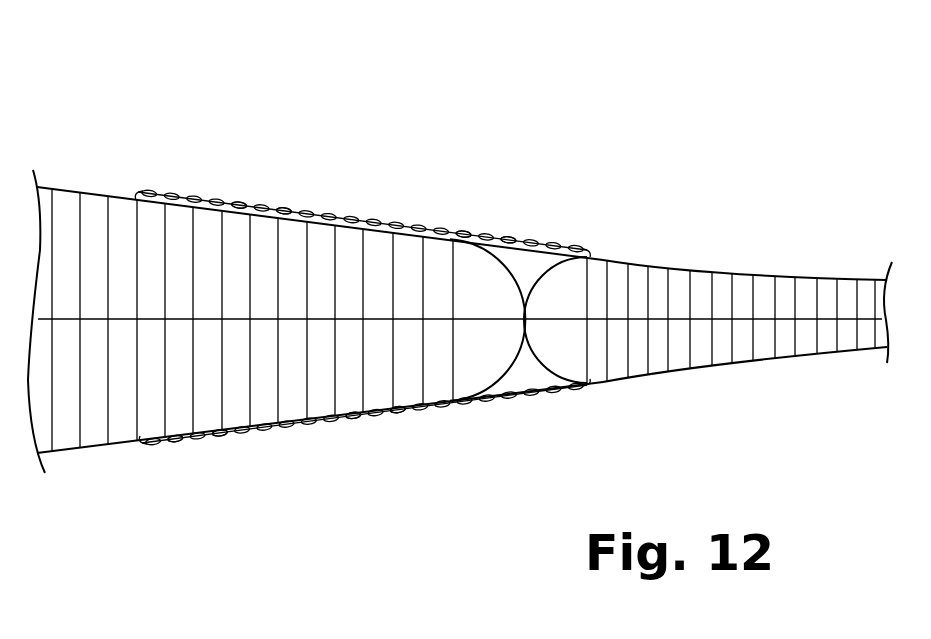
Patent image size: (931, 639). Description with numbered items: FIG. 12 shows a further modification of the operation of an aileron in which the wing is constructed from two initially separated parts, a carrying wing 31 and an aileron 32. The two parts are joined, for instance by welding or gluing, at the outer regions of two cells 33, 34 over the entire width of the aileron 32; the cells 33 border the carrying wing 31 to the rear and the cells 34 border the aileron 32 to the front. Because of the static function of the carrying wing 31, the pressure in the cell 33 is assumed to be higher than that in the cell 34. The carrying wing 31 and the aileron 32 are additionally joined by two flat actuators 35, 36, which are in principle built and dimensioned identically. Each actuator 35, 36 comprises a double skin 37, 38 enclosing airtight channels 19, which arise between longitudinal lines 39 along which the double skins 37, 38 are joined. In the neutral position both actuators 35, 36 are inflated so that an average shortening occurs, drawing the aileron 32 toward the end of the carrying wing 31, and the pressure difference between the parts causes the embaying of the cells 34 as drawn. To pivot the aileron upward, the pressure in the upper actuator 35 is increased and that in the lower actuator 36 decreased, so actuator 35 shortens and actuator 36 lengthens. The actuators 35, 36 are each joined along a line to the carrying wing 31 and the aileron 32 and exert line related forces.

The airtight channels 19 is at (460, 233).
The carrying wing 31 is at (118, 190).
The aileron 32 is at (765, 275).
The cells 33 is at (493, 358).
The cells 34 is at (578, 368).
The upper flat actuator 35 is at (359, 221).
The lower flat actuator 36 is at (272, 430).
The double skin 37 is at (248, 208).
The double skin 38 is at (273, 210).
The longitudinal lines 39 is at (518, 240).